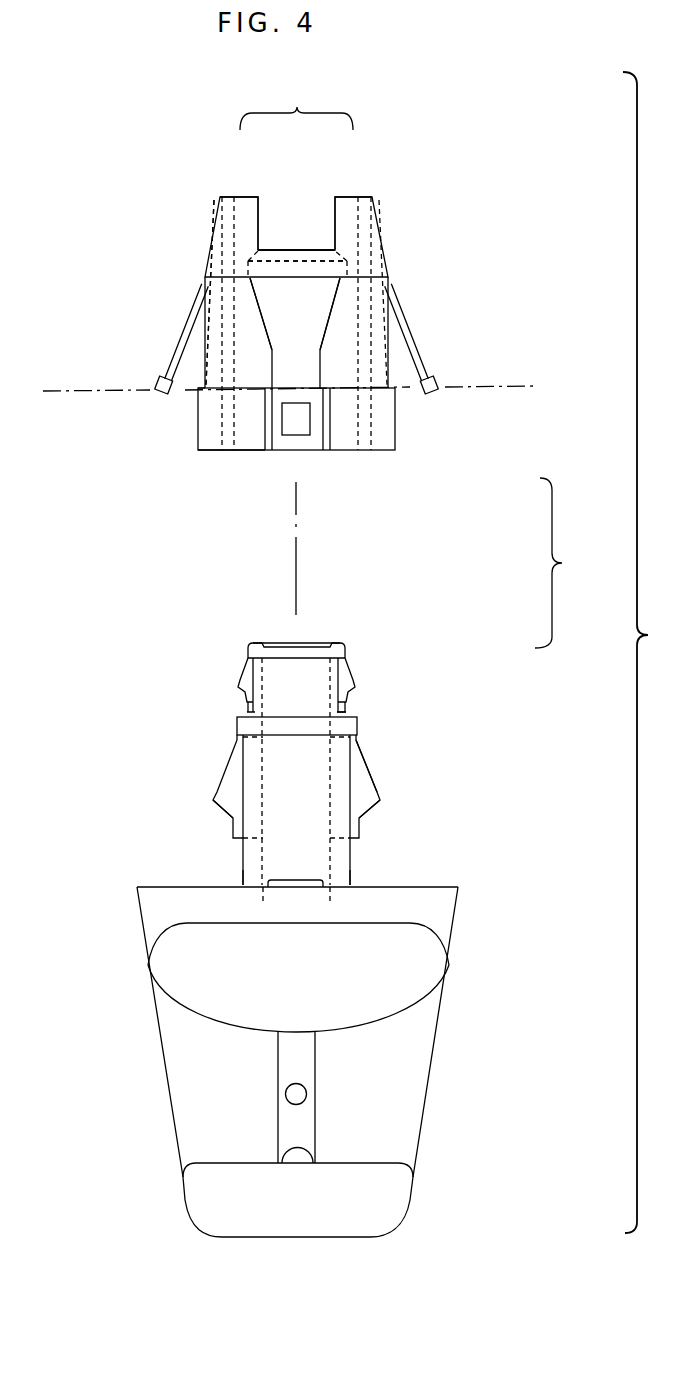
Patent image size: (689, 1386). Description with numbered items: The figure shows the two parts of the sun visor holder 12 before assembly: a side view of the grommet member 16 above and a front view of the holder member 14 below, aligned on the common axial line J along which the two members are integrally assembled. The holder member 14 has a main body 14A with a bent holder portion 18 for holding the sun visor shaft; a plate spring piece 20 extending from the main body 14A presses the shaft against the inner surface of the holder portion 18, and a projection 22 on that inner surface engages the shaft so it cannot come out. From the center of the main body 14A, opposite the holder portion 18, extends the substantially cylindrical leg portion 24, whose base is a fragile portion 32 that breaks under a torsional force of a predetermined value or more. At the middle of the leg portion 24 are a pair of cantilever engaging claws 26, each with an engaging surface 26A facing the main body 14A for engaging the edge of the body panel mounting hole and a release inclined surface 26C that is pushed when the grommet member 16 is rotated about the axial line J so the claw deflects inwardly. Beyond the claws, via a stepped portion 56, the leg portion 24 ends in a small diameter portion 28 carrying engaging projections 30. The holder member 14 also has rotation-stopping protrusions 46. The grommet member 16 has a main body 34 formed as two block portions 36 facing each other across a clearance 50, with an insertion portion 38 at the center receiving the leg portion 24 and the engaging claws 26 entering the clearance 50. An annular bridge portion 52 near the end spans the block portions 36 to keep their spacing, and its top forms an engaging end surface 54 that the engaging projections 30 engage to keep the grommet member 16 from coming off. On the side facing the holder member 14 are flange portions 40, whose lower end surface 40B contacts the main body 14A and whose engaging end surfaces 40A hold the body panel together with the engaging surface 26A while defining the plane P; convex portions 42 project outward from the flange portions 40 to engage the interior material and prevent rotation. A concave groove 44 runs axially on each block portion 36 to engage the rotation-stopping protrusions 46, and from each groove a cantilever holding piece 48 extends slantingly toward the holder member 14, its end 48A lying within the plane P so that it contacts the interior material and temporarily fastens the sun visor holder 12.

The sun visor holder 12 is at (569, 563).
The holder member 14 is at (460, 698).
The main body 14A is at (443, 905).
The grommet member 16 is at (446, 474).
The holder portion 18 is at (413, 1140).
The plate spring piece 20 is at (400, 1002).
The projection 22 is at (295, 1157).
The leg portion 24 is at (235, 717).
The engaging claws 26 is at (210, 792).
The engaging surface 26A is at (213, 805).
The release inclined surface 26C is at (363, 788).
The small diameter portion 28 is at (282, 655).
The engaging projections 30 is at (236, 670).
The fragile portion 32 is at (350, 885).
The main body 34 is at (296, 104).
The block portions 36 is at (243, 193).
The insertion portion 38 is at (320, 217).
The flange portions 40 is at (395, 422).
The engaging end surfaces 40A is at (198, 386).
The lower end surface 40B is at (248, 452).
The convex portions 42 is at (312, 443).
The concave groove 44 is at (223, 233).
The rotation-stopping protrusions 46 is at (293, 882).
The holding piece 48 is at (198, 312).
The end 48A is at (160, 393).
The clearance 50 is at (310, 318).
The bridge portion 52 is at (303, 262).
The engaging end surface 54 is at (277, 252).
The stepped portion 56 is at (353, 708).
The axial line J is at (296, 540).
The plane P is at (513, 385).